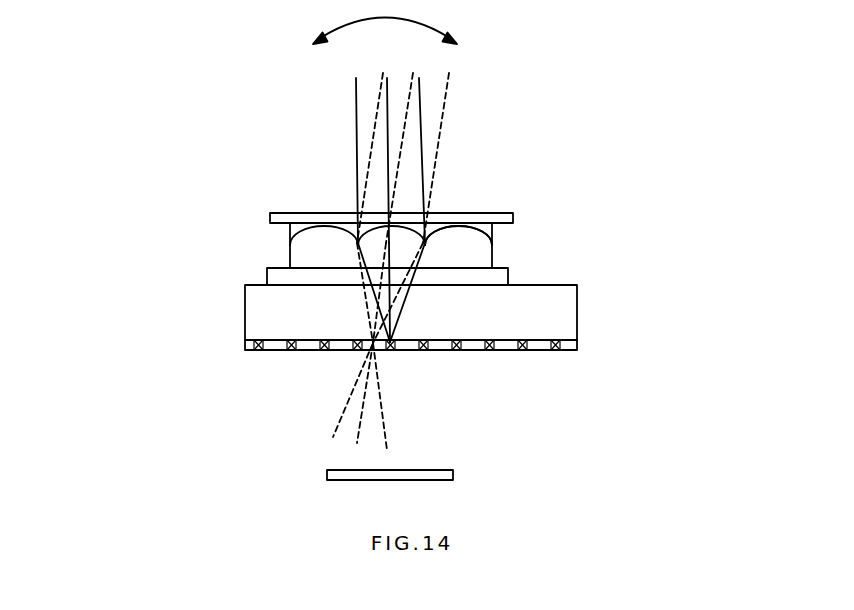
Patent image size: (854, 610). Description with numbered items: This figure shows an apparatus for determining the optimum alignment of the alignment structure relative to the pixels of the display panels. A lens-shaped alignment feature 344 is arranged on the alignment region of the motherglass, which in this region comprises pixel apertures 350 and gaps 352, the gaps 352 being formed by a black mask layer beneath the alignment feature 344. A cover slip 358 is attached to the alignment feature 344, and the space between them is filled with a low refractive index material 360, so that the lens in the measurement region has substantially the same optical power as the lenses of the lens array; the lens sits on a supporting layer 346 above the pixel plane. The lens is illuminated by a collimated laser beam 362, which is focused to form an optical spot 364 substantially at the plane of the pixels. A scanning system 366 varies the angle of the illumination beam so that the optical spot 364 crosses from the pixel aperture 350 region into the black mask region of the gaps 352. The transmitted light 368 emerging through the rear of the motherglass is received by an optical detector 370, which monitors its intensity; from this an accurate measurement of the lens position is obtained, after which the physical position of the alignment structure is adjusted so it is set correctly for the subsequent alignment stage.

The alignment feature 344 is at (296, 251).
The spacer plate 346 is at (507, 281).
The pixel apertures 350 is at (250, 350).
The gaps 352 is at (257, 350).
The cover slip 358 is at (268, 218).
The low refractive index material 360 is at (476, 236).
The collimated laser beam 362 is at (422, 132).
The optical spot 364 is at (400, 344).
The scanning system 366 is at (459, 44).
The transmitted light 368 is at (332, 438).
The optical detector 370 is at (454, 476).